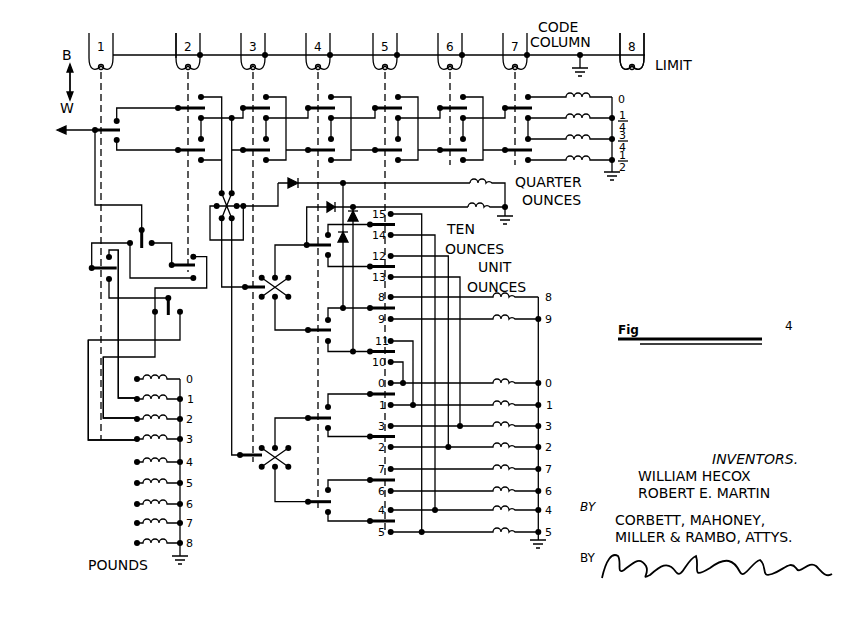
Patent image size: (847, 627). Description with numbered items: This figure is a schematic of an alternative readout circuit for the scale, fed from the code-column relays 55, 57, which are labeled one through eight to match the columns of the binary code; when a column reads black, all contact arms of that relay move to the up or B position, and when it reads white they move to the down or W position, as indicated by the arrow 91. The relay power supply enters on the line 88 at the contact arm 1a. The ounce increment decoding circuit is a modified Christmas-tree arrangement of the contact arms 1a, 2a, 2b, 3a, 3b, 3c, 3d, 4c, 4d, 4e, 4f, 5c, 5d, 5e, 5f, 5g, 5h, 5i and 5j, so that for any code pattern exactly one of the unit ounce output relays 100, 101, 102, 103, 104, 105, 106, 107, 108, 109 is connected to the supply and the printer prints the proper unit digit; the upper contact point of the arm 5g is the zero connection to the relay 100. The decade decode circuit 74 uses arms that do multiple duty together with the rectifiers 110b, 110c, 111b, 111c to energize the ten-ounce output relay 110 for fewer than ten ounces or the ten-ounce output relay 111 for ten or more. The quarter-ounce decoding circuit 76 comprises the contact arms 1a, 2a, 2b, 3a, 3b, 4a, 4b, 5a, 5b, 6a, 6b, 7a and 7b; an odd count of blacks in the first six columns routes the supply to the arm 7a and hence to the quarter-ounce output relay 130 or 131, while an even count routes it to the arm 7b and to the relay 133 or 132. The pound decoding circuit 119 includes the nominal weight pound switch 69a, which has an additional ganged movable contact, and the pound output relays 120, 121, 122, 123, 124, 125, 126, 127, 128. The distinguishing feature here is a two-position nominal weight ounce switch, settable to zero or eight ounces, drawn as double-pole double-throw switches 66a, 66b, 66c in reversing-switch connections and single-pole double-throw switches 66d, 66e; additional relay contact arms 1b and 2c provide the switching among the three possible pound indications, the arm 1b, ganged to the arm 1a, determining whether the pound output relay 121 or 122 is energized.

The relay 55 is at (170, 33).
The relay 57 is at (650, 48).
The quarter-ounce decoding circuit 76 is at (640, 141).
The decade decode circuit 74 is at (517, 208).
The line 88 is at (70, 132).
The arrow 91 is at (72, 80).
The contact arm 1a is at (120, 126).
The contact arm 1b is at (104, 272).
The contact arm 2a is at (178, 106).
The contact arm 2b is at (178, 148).
The contact arm 2c is at (186, 260).
The contact arm 3a is at (243, 106).
The contact arm 3b is at (243, 148).
The contact arm 3c is at (246, 290).
The contact arm 3d is at (246, 460).
The contact arm 4a is at (308, 106).
The contact arm 4b is at (308, 148).
The contact arm 4c is at (310, 243).
The contact arm 4d is at (312, 334).
The contact arm 4e is at (314, 422).
The contact arm 4f is at (314, 506).
The contact arm 5a is at (375, 106).
The contact arm 5b is at (375, 148).
The contact arm 5c is at (393, 226).
The contact arm 5d is at (393, 268).
The contact arm 5e is at (395, 309).
The contact arm 5f is at (393, 350).
The contact arm 5g is at (392, 388).
The contact arm 5h is at (393, 438).
The contact arm 5i is at (393, 481).
The contact arm 5j is at (393, 522).
The contact arm 6a is at (440, 106).
The contact arm 6b is at (440, 148).
The contact arm 7a is at (505, 106).
The contact arm 7b is at (505, 148).
The double-pole double-throw switch 66a is at (239, 208).
The double-pole double-throw switch 66b is at (291, 287).
The double-pole double-throw switch 66c is at (290, 461).
The single-pole double-throw switch 66d is at (140, 230).
The single-pole double-throw switch 66e is at (163, 314).
The nominal weight pound switch 69a is at (110, 444).
The pound decoding circuit 119 is at (112, 500).
The pound output relay 120 is at (155, 375).
The pound output relay 121 is at (150, 396).
The pound output relay 122 is at (150, 416).
The pound output relay 123 is at (150, 436).
The pound output relay 124 is at (150, 459).
The pound output relay 125 is at (150, 480).
The pound output relay 126 is at (150, 501).
The pound output relay 127 is at (150, 520).
The pound output relay 128 is at (150, 540).
The quarter-ounce output relay 130 is at (568, 96).
The quarter-ounce output relay 131 is at (568, 117).
The quarter-ounce output relay 132 is at (568, 159).
The quarter-ounce output relay 133 is at (568, 138).
The ten-ounce output relay 110 is at (470, 182).
The ten-ounce output relay 111 is at (468, 206).
The rectifier 110b is at (288, 182).
The rectifier 111b is at (300, 203).
The rectifier 110c is at (357, 212).
The rectifier 111c is at (348, 241).
The unit ounce output relay 100 is at (497, 378).
The unit ounce output relay 101 is at (497, 400).
The unit ounce output relay 102 is at (497, 443).
The unit ounce output relay 103 is at (497, 421).
The unit ounce output relay 104 is at (496, 506).
The unit ounce output relay 105 is at (494, 528).
The unit ounce output relay 106 is at (496, 487).
The unit ounce output relay 107 is at (496, 465).
The unit ounce output relay 108 is at (496, 299).
The unit ounce output relay 109 is at (498, 321).